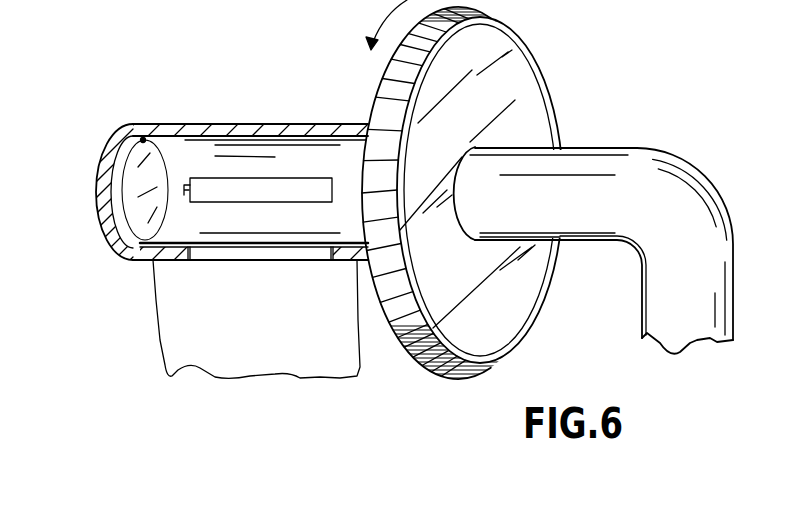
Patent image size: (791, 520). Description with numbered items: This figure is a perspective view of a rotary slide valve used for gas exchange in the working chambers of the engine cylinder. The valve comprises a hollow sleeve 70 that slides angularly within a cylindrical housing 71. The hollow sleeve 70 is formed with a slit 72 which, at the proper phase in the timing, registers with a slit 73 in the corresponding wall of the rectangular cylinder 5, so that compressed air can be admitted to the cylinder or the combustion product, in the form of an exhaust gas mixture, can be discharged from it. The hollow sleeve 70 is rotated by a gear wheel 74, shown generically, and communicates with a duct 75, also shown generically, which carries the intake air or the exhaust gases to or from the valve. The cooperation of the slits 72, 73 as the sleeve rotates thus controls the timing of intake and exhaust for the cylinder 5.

The rectangular cylinder 5 is at (187, 332).
The hollow sleeve 70 is at (143, 140).
The cylindrical housing 71 is at (188, 127).
The slit 72 is at (140, 250).
The slit 73 is at (212, 248).
The gear wheel 74 is at (388, 80).
The duct 75 is at (661, 178).